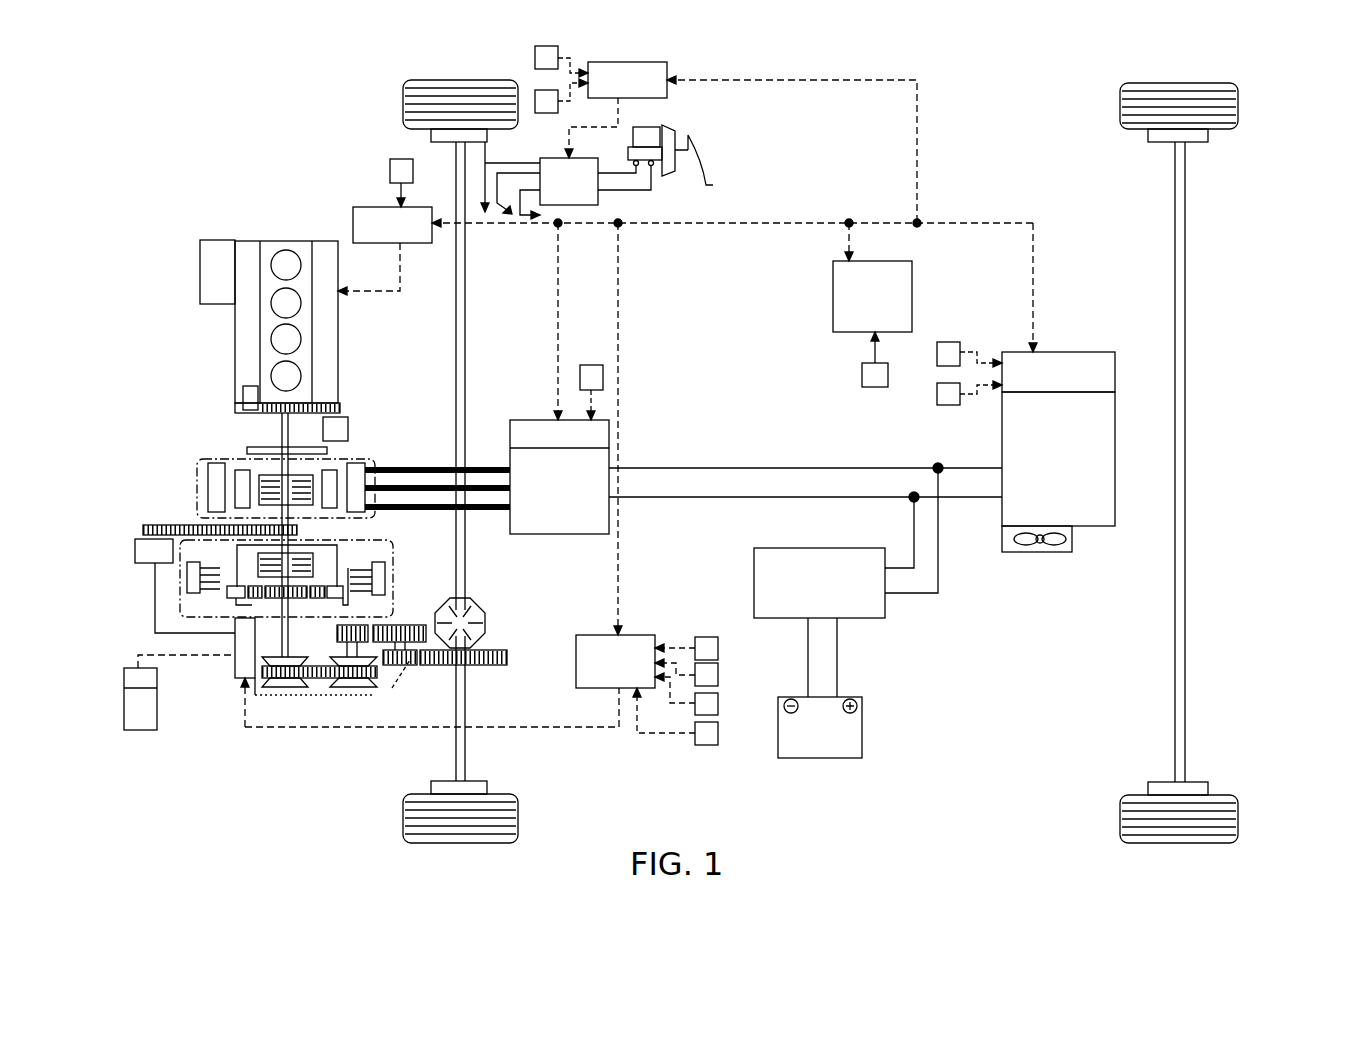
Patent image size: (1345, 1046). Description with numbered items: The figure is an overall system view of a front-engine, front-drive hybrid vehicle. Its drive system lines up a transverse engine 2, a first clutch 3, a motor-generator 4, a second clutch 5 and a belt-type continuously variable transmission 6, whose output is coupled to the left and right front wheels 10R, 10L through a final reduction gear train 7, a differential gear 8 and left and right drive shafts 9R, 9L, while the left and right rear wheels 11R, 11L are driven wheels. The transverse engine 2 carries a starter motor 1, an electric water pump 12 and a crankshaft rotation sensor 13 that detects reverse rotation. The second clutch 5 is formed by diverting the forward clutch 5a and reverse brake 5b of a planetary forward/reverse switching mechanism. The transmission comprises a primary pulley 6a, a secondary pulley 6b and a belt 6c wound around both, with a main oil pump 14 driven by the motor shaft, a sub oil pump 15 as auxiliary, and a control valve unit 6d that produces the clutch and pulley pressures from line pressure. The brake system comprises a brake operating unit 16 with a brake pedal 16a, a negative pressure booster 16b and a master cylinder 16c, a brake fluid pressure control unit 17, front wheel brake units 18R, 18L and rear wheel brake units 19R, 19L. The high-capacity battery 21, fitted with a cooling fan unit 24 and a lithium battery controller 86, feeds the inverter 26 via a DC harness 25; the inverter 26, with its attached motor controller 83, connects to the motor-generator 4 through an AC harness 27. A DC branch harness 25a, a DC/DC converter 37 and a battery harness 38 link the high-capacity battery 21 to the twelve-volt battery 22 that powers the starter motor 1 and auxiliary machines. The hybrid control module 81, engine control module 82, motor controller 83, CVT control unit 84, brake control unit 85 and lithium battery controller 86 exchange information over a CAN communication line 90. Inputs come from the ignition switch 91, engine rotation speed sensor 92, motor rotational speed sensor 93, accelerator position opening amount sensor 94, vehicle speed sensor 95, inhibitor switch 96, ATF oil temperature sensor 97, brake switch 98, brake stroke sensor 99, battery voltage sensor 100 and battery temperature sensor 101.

The starter motor 1 is at (340, 430).
The transverse engine 2 is at (303, 248).
The first clutch 3 is at (275, 488).
The motor-generator 4 is at (216, 488).
The second clutch 5 is at (192, 605).
The forward clutch 5a is at (300, 562).
The reverse brake 5b is at (200, 617).
The belt-type continuously variable transmission 6 is at (294, 705).
The primary pulley 6a is at (300, 692).
The secondary pulley 6b is at (355, 692).
The belt 6c is at (335, 665).
The control valve unit 6d is at (244, 670).
The final reduction gear train 7 is at (420, 668).
The differential gear 8 is at (478, 612).
The right drive shaft 9R is at (467, 260).
The left drive shaft 9L is at (467, 745).
The right front wheel 10R is at (403, 105).
The left front wheel 10L is at (403, 830).
The right rear wheel 11R is at (1238, 105).
The left rear wheel 11L is at (1238, 818).
The electric water pump 12 is at (210, 245).
The crankshaft rotation sensor 13 is at (245, 393).
The main oil pump 14 is at (147, 551).
The sub oil pump 15 is at (140, 705).
The brake operating unit 16 is at (682, 124).
The brake pedal 16a is at (710, 186).
The negative pressure booster 16b is at (672, 175).
The master cylinder 16c is at (633, 140).
The brake fluid pressure control unit 17 is at (598, 204).
The right front wheel brake unit 18R is at (445, 142).
The left front wheel brake unit 18L is at (490, 787).
The right rear wheel brake unit 19R is at (1168, 142).
The left rear wheel brake unit 19L is at (1168, 782).
The high-capacity battery 21 is at (1100, 406).
The 12V battery 22 is at (792, 750).
The cooling fan unit 24 is at (1040, 545).
The DC harness 25 is at (680, 490).
The DC branch harness 25a is at (942, 580).
The inverter 26 is at (575, 512).
The AC harness 27 is at (435, 470).
The DC/DC converter 37 is at (760, 607).
The battery harness 38 is at (825, 668).
The hybrid control module 81 is at (868, 261).
The engine control module 82 is at (360, 207).
The motor controller 83 is at (518, 420).
The CVT control unit 84 is at (576, 662).
The brake control unit 85 is at (620, 62).
The lithium battery controller 86 is at (1100, 372).
The CAN communication line 90 is at (800, 223).
The ignition switch 91 is at (875, 387).
The engine rotation speed sensor 92 is at (401, 159).
The motor rotational speed sensor 93 is at (591, 365).
The accelerator position opening amount sensor 94 is at (718, 648).
The vehicle speed sensor 95 is at (718, 675).
The inhibitor switch 96 is at (718, 703).
The ATF oil temperature sensor 97 is at (718, 733).
The brake switch 98 is at (535, 57).
The brake stroke sensor 99 is at (547, 113).
The battery voltage sensor 100 is at (948, 342).
The battery temperature sensor 101 is at (946, 437).